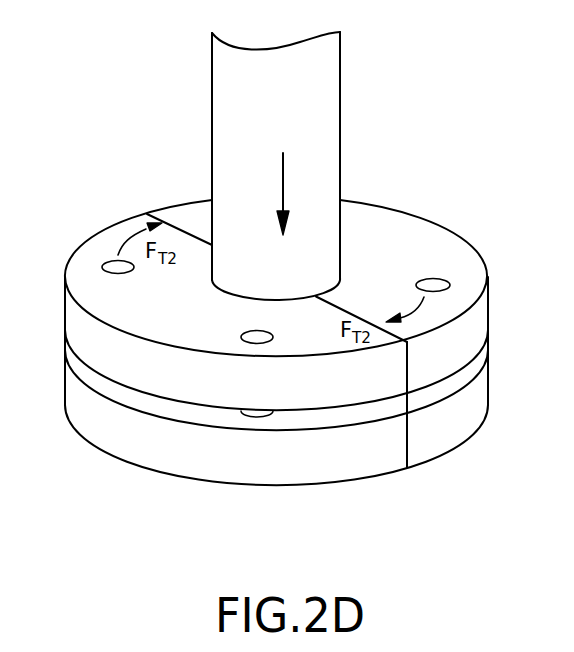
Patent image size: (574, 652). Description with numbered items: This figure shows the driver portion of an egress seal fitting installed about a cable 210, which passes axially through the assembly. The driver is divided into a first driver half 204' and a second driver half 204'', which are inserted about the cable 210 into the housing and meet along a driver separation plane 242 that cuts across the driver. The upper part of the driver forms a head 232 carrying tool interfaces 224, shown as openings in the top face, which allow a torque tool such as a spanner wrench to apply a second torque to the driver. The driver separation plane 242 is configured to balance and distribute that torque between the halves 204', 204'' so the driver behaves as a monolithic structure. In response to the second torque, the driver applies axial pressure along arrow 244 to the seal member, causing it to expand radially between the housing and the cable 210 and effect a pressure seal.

The cable 210 is at (327, 66).
The arrow indicating axial pressure 244 is at (283, 178).
The first driver half 204' is at (277, 296).
The second driver half 204'' is at (249, 404).
The head 232 is at (484, 327).
The driver separation plane 242 is at (344, 308).
The tool interfaces 224 is at (105, 266).